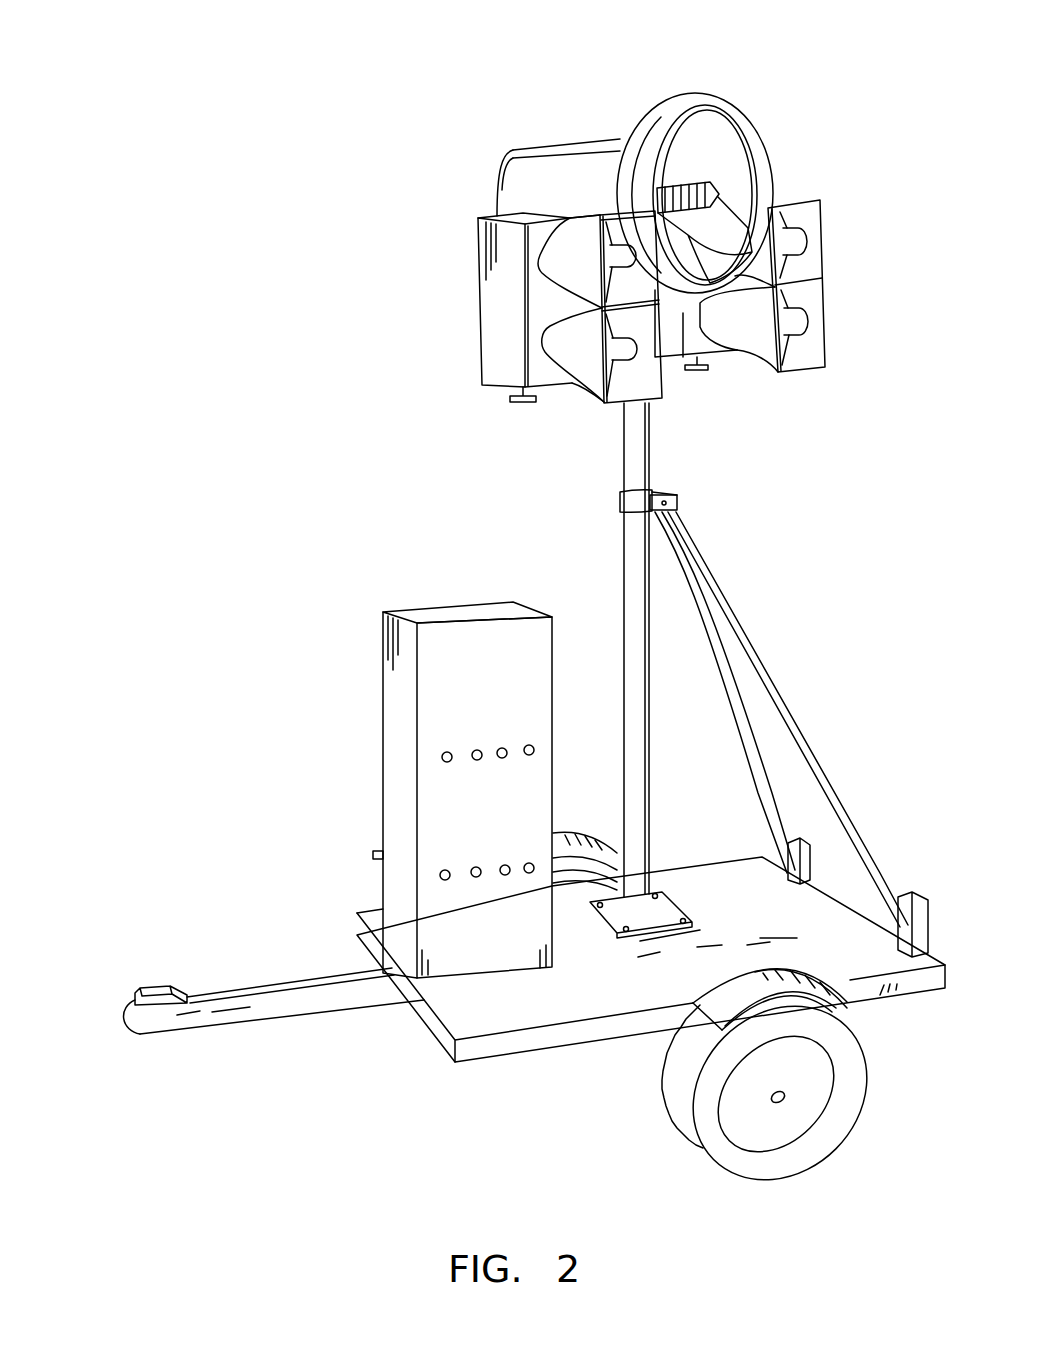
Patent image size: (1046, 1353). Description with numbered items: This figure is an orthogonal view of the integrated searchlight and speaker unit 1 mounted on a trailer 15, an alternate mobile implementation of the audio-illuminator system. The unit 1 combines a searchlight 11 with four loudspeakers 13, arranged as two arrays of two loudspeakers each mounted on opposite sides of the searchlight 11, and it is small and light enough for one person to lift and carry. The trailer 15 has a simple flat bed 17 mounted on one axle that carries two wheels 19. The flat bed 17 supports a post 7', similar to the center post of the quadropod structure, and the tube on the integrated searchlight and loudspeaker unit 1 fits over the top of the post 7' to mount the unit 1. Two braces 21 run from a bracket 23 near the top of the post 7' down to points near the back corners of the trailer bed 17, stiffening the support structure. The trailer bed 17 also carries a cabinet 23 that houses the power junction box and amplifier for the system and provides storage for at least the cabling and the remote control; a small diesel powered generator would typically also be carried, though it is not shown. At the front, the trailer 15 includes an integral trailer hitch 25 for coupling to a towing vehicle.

The integrated searchlight and speaker unit 1 is at (774, 63).
The searchlight 11 is at (665, 97).
The loudspeakers 13 is at (532, 285).
The trailer 15 is at (353, 484).
The post 7' is at (608, 650).
The bracket / cabinet 23 is at (657, 495).
The braces 21 is at (744, 696).
The flat bed 17 is at (508, 1022).
The wheels 19 is at (826, 1128).
The trailer hitch 25 is at (136, 1016).